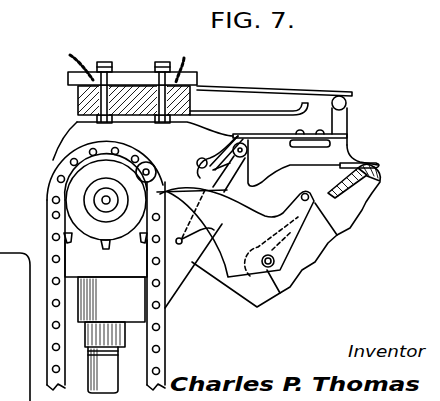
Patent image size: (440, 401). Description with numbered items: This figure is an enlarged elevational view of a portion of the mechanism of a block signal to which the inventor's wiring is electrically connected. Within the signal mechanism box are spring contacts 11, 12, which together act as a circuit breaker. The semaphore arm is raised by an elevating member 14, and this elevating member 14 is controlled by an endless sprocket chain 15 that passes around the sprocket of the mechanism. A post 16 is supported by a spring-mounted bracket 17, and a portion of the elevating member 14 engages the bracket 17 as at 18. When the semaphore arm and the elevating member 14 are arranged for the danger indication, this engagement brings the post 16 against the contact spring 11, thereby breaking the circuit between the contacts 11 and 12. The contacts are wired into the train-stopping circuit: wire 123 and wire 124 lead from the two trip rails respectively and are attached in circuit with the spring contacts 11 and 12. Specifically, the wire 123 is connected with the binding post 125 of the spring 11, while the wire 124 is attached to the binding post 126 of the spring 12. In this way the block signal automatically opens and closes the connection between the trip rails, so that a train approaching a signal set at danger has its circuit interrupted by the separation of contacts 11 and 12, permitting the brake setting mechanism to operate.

The spring contact 11 is at (232, 91).
The spring contact 12 is at (270, 112).
The elevating member 14 is at (237, 232).
The endless sprocket chain 15 is at (166, 348).
The post 16 is at (347, 105).
The spring-mounted bracket 17 is at (357, 158).
The engagement point 18 is at (378, 170).
The wire 123 is at (69, 57).
The wire 124 is at (184, 57).
The binding post 125 is at (80, 105).
The binding post 126 is at (138, 90).